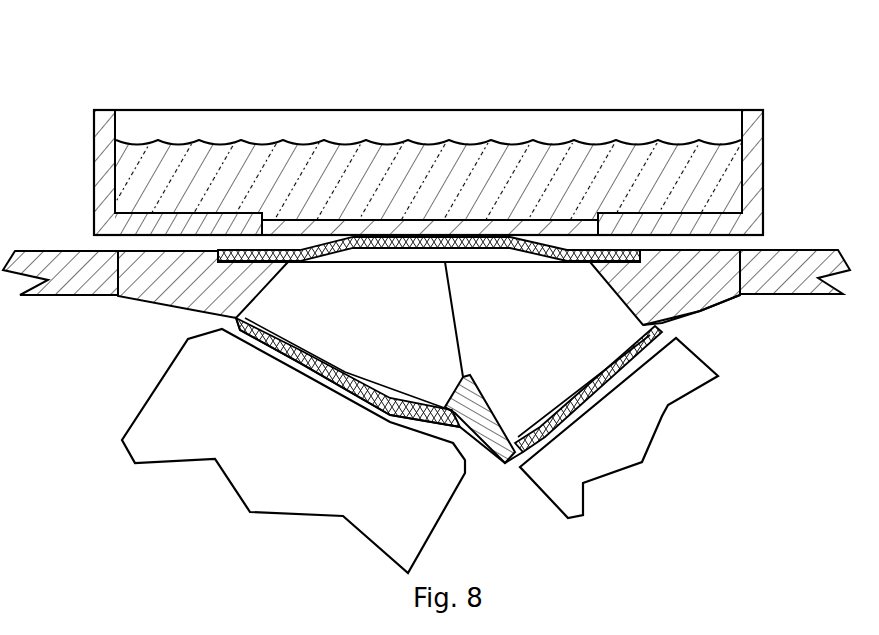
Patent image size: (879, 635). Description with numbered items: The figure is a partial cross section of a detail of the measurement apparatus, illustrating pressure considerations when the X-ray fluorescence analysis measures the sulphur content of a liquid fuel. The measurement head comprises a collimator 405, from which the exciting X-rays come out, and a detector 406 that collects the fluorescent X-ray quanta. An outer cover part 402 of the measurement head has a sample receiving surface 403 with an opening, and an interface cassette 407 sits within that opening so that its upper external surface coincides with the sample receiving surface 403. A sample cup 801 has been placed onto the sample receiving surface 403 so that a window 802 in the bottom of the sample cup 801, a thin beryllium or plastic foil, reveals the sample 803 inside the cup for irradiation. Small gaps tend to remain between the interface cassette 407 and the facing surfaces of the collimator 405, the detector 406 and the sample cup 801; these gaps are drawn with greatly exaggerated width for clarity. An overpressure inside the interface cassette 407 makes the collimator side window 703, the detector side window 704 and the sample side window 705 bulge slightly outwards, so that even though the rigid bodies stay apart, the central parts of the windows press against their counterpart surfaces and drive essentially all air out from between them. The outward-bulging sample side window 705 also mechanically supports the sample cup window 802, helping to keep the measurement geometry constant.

The sample cup 801 is at (764, 146).
The window 802 is at (555, 223).
The sample 803 is at (378, 163).
The outer cover part 402 is at (776, 286).
The sample receiving surface 403 is at (788, 250).
The collimator 405 is at (557, 488).
The detector 406 is at (423, 514).
The interface cassette 407 is at (704, 312).
The collimator side window 703 is at (595, 396).
The detector side window 704 is at (317, 360).
The sample side window 705 is at (528, 246).